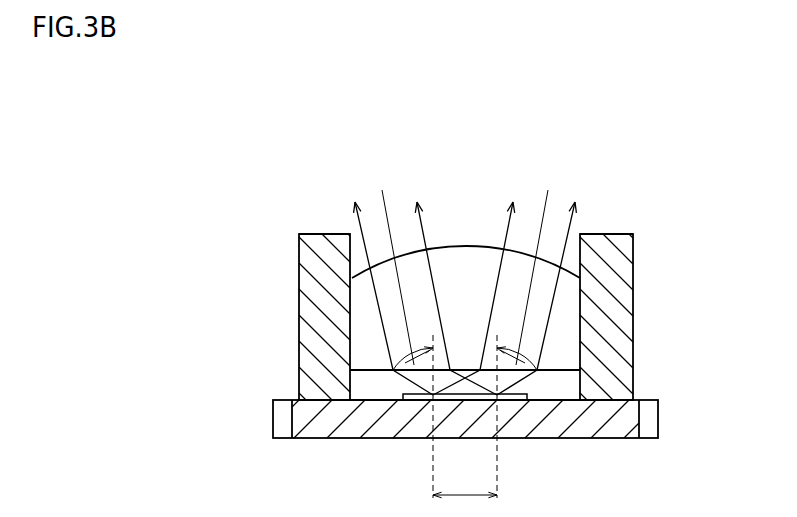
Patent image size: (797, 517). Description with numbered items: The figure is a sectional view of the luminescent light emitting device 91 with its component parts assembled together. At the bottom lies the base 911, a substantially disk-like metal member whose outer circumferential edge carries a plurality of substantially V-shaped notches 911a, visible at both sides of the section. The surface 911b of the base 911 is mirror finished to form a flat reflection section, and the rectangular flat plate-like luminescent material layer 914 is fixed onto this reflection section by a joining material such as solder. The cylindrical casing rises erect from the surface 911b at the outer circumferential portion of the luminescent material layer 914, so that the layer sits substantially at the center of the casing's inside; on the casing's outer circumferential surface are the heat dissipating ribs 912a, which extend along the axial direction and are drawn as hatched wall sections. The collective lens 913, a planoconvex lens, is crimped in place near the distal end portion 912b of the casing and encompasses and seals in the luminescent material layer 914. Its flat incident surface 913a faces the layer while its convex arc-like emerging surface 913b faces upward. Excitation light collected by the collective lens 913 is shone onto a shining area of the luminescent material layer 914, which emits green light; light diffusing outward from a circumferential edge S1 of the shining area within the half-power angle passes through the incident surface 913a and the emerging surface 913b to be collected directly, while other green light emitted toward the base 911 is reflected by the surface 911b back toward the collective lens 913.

The luminescent light emitting device 91 is at (285, 193).
The base 911 is at (612, 440).
The notches 911a is at (283, 420).
The surface 911b is at (553, 400).
The heat dissipating ribs 912a is at (298, 253).
The distal end portion 912b is at (613, 235).
The collective lens 913 is at (367, 332).
The incident surface 913a is at (371, 371).
The light emerging surface 913b is at (462, 247).
The luminescent material layer 914 is at (528, 395).
The circumferential edge S1 is at (432, 398).